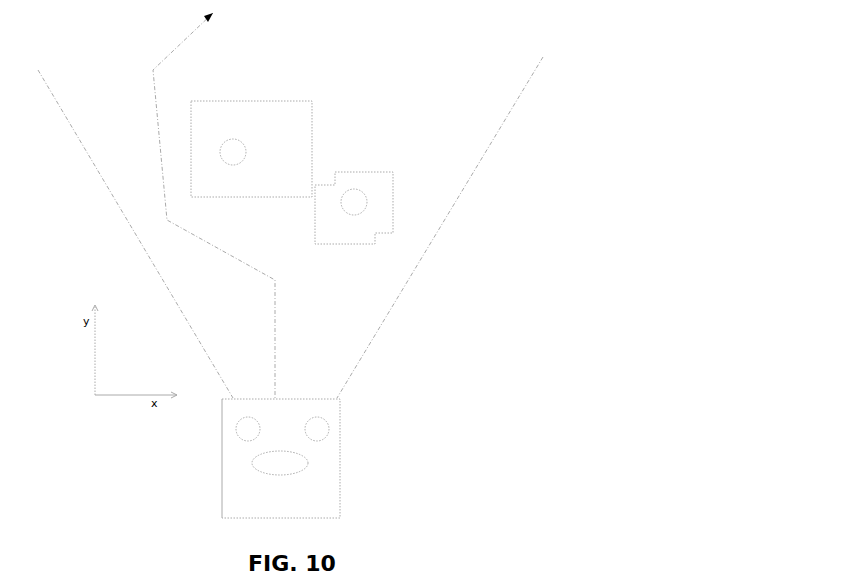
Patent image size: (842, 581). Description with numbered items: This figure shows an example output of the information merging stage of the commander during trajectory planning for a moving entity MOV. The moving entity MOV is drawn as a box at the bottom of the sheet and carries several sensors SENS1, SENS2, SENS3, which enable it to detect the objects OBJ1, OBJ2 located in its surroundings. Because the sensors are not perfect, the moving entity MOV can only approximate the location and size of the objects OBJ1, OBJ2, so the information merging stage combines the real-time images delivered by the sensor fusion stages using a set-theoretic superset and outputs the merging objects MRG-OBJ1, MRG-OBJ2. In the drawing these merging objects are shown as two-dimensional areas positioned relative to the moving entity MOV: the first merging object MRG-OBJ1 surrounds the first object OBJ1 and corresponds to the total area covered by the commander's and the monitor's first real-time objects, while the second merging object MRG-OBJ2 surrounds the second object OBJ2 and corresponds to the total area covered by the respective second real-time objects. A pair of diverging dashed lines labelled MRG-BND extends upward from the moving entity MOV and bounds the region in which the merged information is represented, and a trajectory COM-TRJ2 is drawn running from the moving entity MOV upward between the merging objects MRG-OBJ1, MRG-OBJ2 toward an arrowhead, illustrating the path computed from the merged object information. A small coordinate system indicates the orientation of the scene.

The merge boundary MRG-BND is at (77, 100).
The combined trajectory COM-TRJ2 is at (193, 33).
The first merging object MRG-OBJ1 is at (313, 123).
The second merging object MRG-OBJ2 is at (413, 177).
The first object OBJ1 is at (246, 156).
The second object OBJ2 is at (353, 215).
The moving entity MOV is at (342, 455).
The first sensor SENS1 is at (236, 430).
The second sensor SENS2 is at (331, 426).
The third sensor SENS3 is at (252, 465).